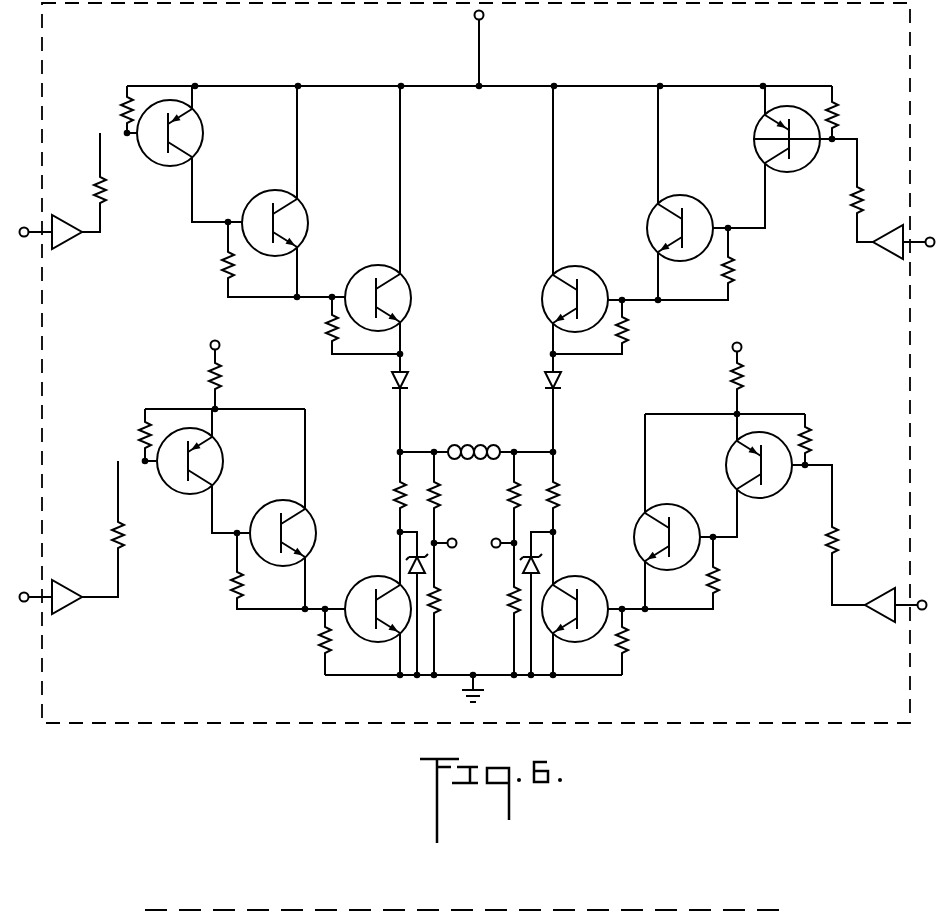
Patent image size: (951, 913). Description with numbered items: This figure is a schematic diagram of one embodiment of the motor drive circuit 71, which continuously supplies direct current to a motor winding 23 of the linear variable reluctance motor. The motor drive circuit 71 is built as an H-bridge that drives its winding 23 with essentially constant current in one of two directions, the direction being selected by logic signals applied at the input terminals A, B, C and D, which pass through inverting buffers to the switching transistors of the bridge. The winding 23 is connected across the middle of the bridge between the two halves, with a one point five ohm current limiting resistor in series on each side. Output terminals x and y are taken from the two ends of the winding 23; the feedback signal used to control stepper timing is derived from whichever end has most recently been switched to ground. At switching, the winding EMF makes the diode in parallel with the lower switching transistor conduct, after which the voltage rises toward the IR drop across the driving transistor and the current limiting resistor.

The motor drive circuit 71 is at (223, 34).
The winding 23 is at (478, 443).
The input terminal A is at (45, 228).
The input terminal B is at (899, 601).
The input terminal C is at (45, 593).
The input terminal D is at (904, 235).
The output terminal x is at (445, 554).
The output terminal y is at (502, 553).